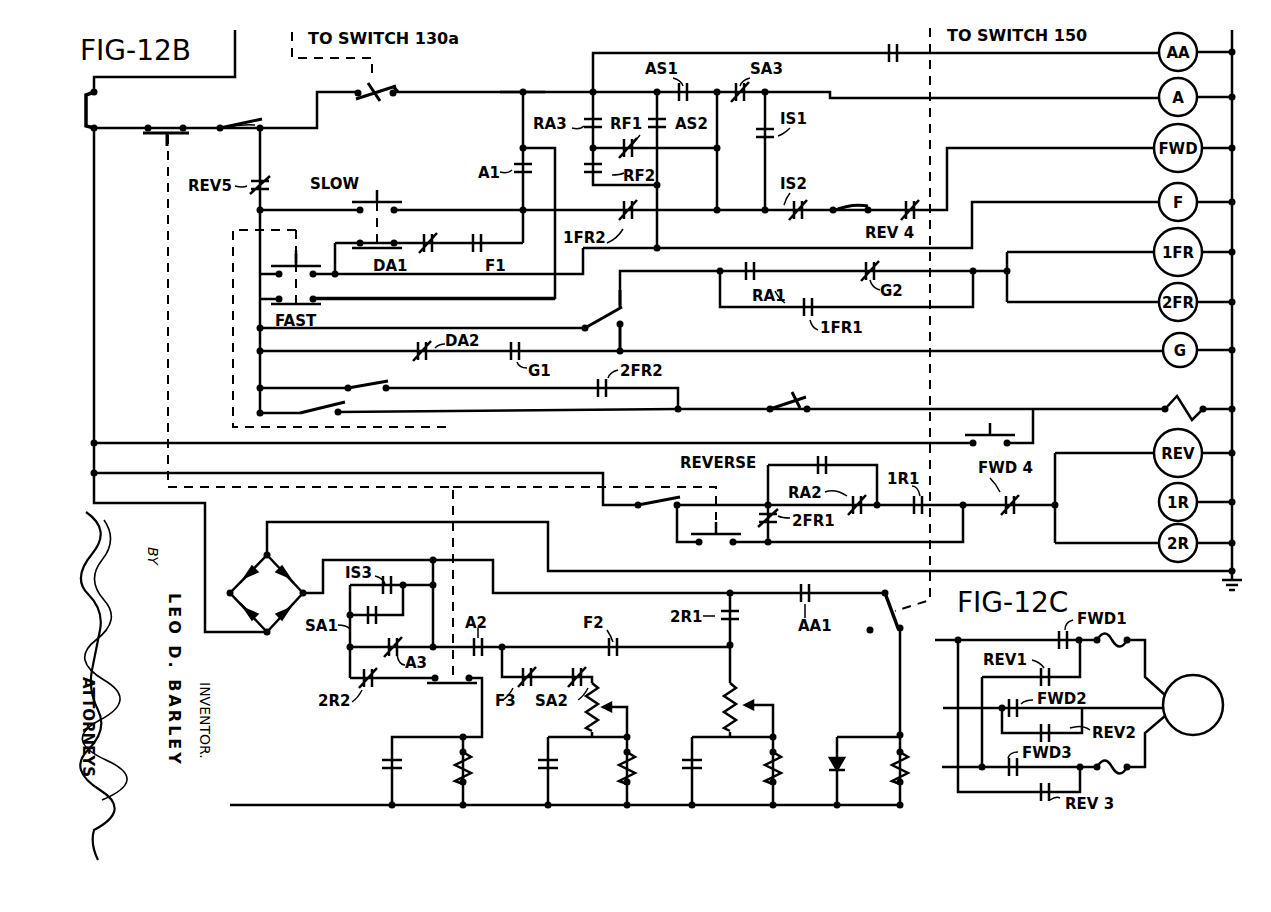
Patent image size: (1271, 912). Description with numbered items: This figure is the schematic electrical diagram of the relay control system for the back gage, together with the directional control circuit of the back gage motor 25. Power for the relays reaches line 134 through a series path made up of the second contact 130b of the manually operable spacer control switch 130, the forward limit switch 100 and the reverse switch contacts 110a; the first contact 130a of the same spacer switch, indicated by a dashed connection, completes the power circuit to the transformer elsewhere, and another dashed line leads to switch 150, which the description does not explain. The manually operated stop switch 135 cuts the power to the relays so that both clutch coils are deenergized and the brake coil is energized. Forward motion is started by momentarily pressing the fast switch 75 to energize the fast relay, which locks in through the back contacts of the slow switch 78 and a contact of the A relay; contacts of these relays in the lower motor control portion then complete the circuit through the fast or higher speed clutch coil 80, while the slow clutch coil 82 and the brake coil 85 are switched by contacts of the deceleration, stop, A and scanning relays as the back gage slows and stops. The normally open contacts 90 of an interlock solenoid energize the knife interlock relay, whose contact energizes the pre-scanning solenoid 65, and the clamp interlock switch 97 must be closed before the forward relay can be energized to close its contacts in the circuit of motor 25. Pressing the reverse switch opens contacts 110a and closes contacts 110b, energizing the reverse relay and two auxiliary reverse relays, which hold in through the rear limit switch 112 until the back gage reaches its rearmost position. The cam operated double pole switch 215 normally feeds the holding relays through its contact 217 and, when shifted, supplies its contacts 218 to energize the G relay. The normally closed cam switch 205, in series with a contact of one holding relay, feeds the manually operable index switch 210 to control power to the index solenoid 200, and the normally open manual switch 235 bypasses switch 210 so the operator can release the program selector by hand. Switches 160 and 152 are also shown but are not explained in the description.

In FIG. 12B, the stop switch 135 is at (96, 98).
In FIG. 12B, the reverse switch contacts 110a is at (155, 140).
In FIG. 12B, the forward limit switch 100 is at (248, 120).
In FIG. 12B, the spacer control switch 130 is at (366, 99).
In FIG. 12B, the first contact of spacer control switch 130a is at (292, 30).
In FIG. 12B, the second contact of spacer control switch 130b is at (394, 82).
In FIG. 12B, the line 134 is at (497, 88).
In FIG. 12B, the slow switch 78 is at (385, 196).
In FIG. 12B, the fast switch 75 is at (305, 252).
In FIG. 12B, the interlock solenoid contacts 90 is at (888, 46).
In FIG. 12B, the switch connection 150 is at (930, 26).
In FIG. 12B, the clamp interlock switch 97 is at (858, 204).
In FIG. 12B, the double pole switch 215 is at (607, 318).
In FIG. 12B, the switch contact 217 is at (623, 302).
In FIG. 12B, the switch contacts 218 is at (625, 334).
In FIG. 12B, the switch 160 is at (309, 405).
In FIG. 12B, the normally closed switch 205 is at (370, 382).
In FIG. 12B, the index switch 210 is at (805, 384).
In FIG. 12B, the index solenoid 200 is at (1172, 398).
In FIG. 12B, the manually operated switch 235 is at (978, 448).
In FIG. 12B, the rear limit switch 112 is at (656, 508).
In FIG. 12B, the reverse switch contacts 110b is at (712, 542).
In FIG. 12B, the switch 152 is at (888, 633).
In FIG. 12B, the pre-scanning solenoid 65 is at (906, 760).
In FIG. 12B, the brake coil 85 is at (470, 768).
In FIG. 12B, the slow clutch 82 is at (634, 768).
In FIG. 12B, the fast clutch 80 is at (780, 768).
In FIG. 12C, the electrical motor 25 is at (1196, 679).